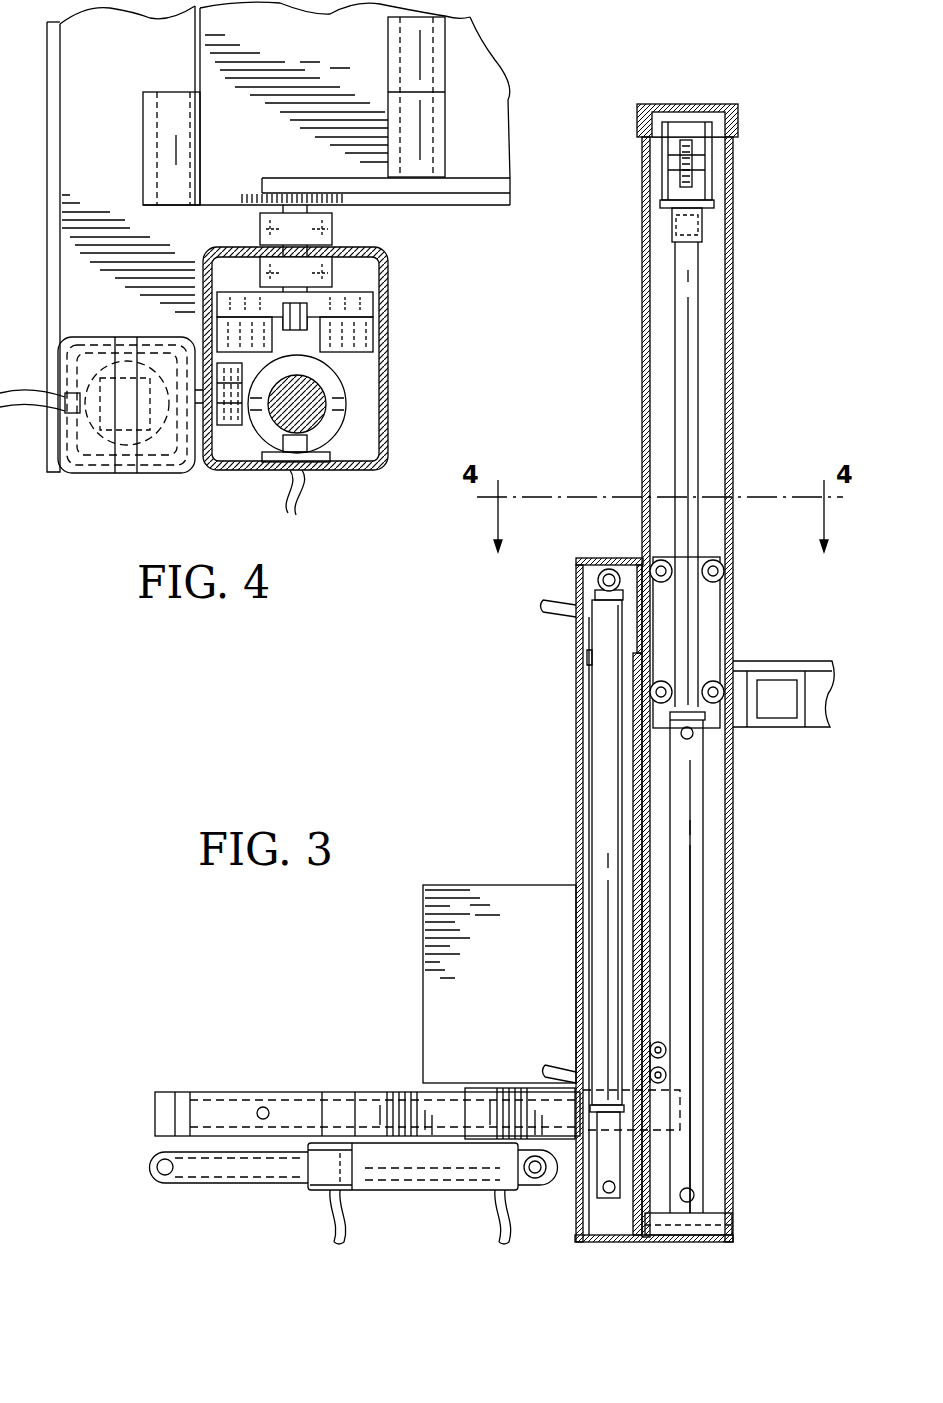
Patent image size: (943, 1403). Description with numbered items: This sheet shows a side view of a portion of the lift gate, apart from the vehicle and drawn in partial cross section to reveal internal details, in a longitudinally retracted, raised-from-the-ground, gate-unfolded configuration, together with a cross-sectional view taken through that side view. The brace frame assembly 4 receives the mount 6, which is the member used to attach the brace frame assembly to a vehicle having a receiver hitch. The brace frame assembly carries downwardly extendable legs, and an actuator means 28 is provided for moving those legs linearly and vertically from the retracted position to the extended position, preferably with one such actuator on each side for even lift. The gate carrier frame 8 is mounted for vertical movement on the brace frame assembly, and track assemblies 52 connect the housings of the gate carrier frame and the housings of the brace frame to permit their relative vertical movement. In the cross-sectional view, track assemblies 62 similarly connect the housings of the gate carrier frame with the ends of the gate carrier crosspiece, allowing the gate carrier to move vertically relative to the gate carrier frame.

In FIG. 3, the brace frame assembly 4 is at (552, 837).
In FIG. 3, the mount 6 is at (398, 1092).
In FIG. 3, the gate carrier frame 8 is at (738, 311).
In FIG. 3, the actuator means 28 is at (638, 607).
In FIG. 4, the track assemblies 52 is at (230, 422).
In FIG. 3, the track assemblies 52 is at (658, 1040).
In FIG. 4, the track assemblies 62 is at (332, 268).